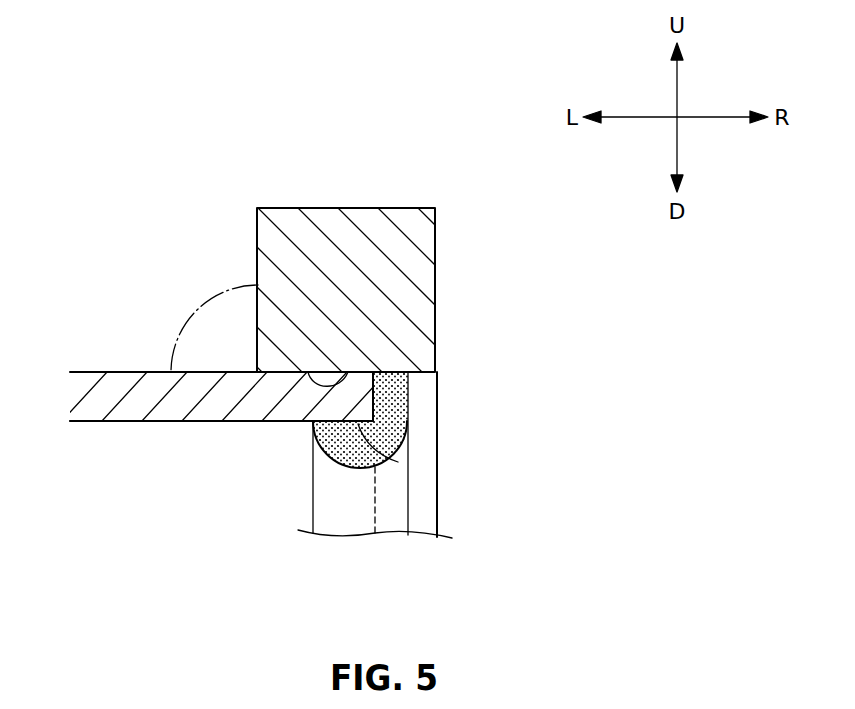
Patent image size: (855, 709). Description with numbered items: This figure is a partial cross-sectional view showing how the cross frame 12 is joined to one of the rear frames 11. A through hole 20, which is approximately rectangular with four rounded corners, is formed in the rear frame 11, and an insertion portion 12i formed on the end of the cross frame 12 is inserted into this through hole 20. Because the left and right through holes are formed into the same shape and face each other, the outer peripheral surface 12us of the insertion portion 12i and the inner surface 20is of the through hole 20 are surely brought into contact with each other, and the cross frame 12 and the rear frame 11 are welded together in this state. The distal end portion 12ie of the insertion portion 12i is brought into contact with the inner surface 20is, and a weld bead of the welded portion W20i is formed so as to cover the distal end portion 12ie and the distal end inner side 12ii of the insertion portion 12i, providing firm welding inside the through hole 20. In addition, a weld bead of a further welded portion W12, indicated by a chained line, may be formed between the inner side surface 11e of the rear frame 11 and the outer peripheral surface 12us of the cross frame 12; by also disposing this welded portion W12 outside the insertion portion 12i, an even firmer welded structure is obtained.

The rear frame 11 is at (307, 207).
The inner side surface of the rear frame 11e is at (257, 276).
The cross frame 12 is at (128, 360).
The outer peripheral surface of the insertion portion 12us is at (287, 372).
The insertion portion 12i is at (297, 435).
The distal end portion of the insertion portion 12ie is at (376, 388).
The distal end inner side of the insertion portion 12ii is at (400, 458).
The welded portion W12 is at (195, 315).
The through hole 20 is at (455, 510).
The inner surface of the through hole 20is is at (343, 372).
The welded portion W20i is at (385, 465).